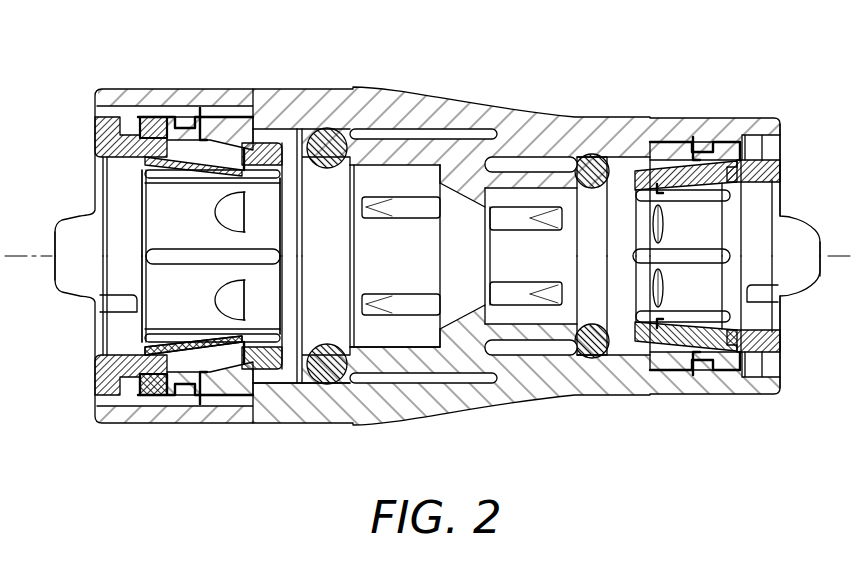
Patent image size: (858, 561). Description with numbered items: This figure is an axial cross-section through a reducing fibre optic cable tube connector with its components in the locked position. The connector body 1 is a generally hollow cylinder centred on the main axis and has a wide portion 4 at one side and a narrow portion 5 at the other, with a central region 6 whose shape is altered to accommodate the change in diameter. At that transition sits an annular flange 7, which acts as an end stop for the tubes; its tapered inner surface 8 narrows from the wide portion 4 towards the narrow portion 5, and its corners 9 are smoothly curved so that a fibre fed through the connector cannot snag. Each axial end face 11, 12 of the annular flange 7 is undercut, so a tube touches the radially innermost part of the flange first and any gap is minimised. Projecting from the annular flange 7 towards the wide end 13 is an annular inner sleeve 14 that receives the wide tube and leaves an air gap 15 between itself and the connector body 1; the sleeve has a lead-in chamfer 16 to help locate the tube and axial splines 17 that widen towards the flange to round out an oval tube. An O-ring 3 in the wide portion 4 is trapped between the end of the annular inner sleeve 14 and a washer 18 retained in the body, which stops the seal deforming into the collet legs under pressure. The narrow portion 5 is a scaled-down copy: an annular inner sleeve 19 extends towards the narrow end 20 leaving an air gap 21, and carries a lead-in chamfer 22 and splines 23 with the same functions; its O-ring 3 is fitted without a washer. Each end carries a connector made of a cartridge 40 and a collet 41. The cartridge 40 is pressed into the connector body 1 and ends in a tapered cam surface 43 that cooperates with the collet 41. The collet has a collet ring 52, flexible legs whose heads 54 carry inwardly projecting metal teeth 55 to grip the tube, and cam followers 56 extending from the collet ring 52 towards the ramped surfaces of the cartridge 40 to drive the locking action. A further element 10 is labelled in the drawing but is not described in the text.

The connector body 1 is at (425, 92).
The O-ring seal 3 is at (327, 128).
The wide portion 4 is at (102, 78).
The narrow portion 5 is at (770, 100).
The central region 6 is at (478, 62).
The annular flange 7 is at (472, 340).
The tapered inner surface 8 is at (481, 301).
The corners 9 is at (440, 188).
The second contact pin 10 is at (495, 212).
The axial end face 11 is at (440, 338).
The axial end face 12 is at (492, 316).
The wide end 13 is at (105, 443).
The annular inner sleeve 14 is at (380, 362).
The air gap 15 is at (448, 370).
The lead-in chamfer 16 is at (373, 165).
The axial splines 17 is at (400, 215).
The washer 18 is at (288, 114).
The annular inner sleeve 19 is at (522, 165).
The narrow end 20 is at (773, 408).
The air gap 21 is at (545, 150).
The lead-in chamfer 22 is at (557, 189).
The splines 23 is at (552, 294).
The cartridge 40 is at (215, 115).
The collet 41 is at (98, 137).
The tapered cam surface 43 is at (222, 372).
The collet ring 52 is at (98, 376).
The head 54 is at (283, 363).
The metal tooth 55 is at (220, 300).
The cam followers 56 is at (150, 108).